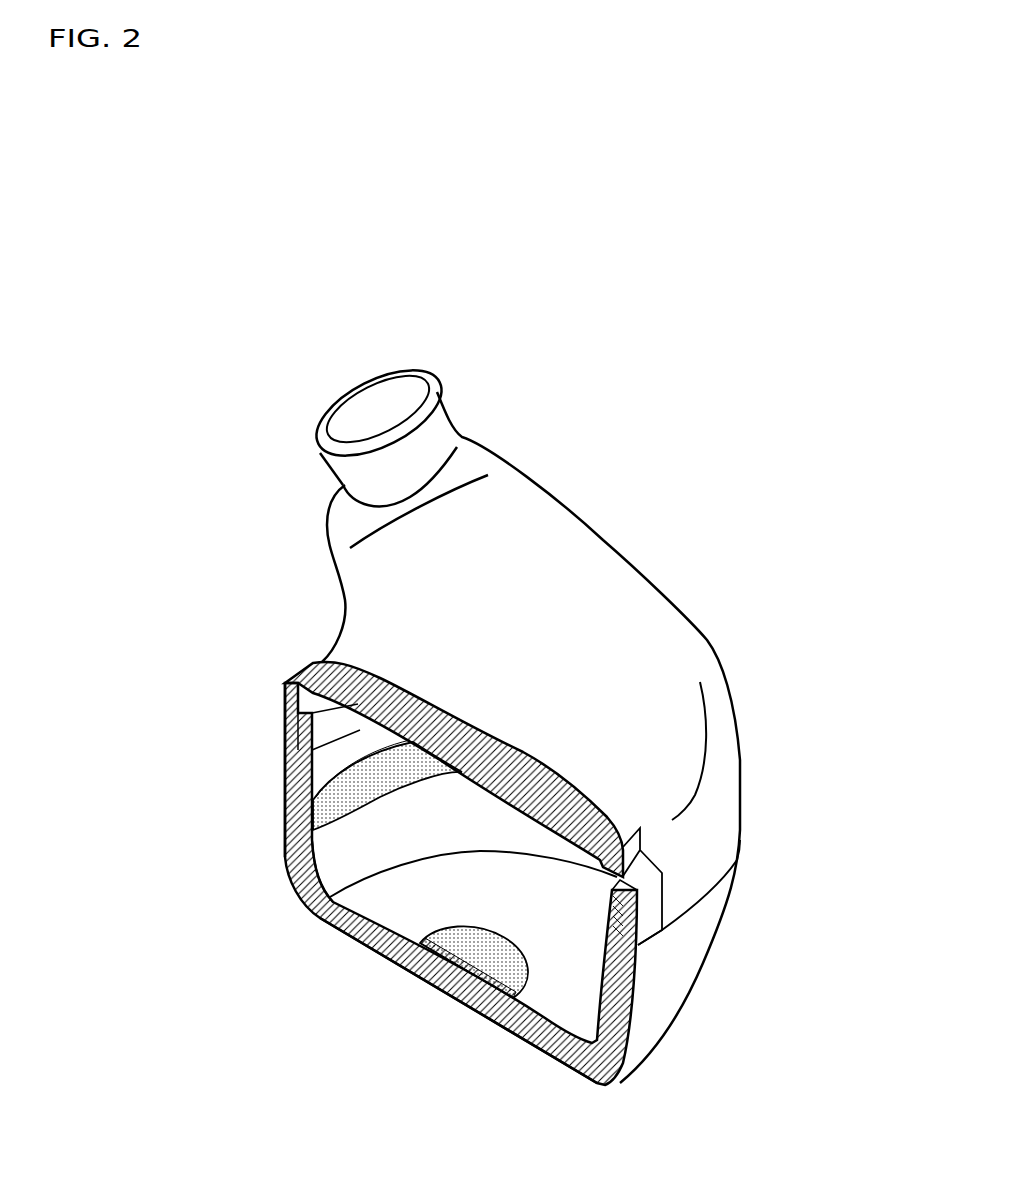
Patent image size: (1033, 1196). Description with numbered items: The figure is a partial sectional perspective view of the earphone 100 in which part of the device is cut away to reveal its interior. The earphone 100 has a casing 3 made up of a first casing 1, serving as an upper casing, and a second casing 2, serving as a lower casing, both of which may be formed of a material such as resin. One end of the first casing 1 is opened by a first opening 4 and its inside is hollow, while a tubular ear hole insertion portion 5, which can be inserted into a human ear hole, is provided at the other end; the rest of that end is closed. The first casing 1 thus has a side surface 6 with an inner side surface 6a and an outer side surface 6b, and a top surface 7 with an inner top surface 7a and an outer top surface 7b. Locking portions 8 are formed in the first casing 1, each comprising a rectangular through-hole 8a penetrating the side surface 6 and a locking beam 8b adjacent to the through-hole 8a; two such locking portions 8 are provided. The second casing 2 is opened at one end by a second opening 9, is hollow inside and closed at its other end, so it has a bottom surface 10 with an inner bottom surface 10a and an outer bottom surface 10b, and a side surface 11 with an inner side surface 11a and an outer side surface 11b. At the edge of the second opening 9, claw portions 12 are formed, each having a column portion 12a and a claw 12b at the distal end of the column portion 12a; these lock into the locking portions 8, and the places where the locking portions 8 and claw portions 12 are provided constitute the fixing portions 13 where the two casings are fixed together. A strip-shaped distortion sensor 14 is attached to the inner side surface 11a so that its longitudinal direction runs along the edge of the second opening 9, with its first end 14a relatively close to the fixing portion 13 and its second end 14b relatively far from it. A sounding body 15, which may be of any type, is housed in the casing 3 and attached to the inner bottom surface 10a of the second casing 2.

The earphone 100 is at (232, 354).
The ear hole insertion portion 5 is at (443, 385).
The side surface 6 is at (725, 770).
The inner side surface 6a is at (285, 735).
The outer side surface 6b is at (727, 790).
The top surface 7 is at (477, 757).
The inner top surface 7a is at (485, 806).
The outer top surface 7b is at (493, 707).
The locking portion 8 is at (530, 882).
The through-hole 8a is at (611, 880).
The locking beam 8b is at (615, 920).
The second opening 9 is at (498, 830).
The bottom surface 10 is at (533, 1032).
The inner bottom surface 10a is at (547, 1016).
The outer bottom surface 10b is at (538, 1065).
The side surface 11 is at (650, 997).
The inner side surface 11a is at (326, 848).
The outer side surface 11b is at (650, 1012).
The claw portion 12 is at (790, 897).
The column portion 12a is at (647, 912).
The claw 12b is at (642, 880).
The fixing portion 13 is at (666, 943).
The distortion sensor 14 is at (377, 770).
The first end 14a is at (312, 813).
The second end 14b is at (417, 772).
The sounding body 15 is at (483, 957).
The first casing 1 is at (725, 825).
The second casing 2 is at (723, 890).
The casing 3 is at (822, 823).
The first opening 4 is at (433, 812).